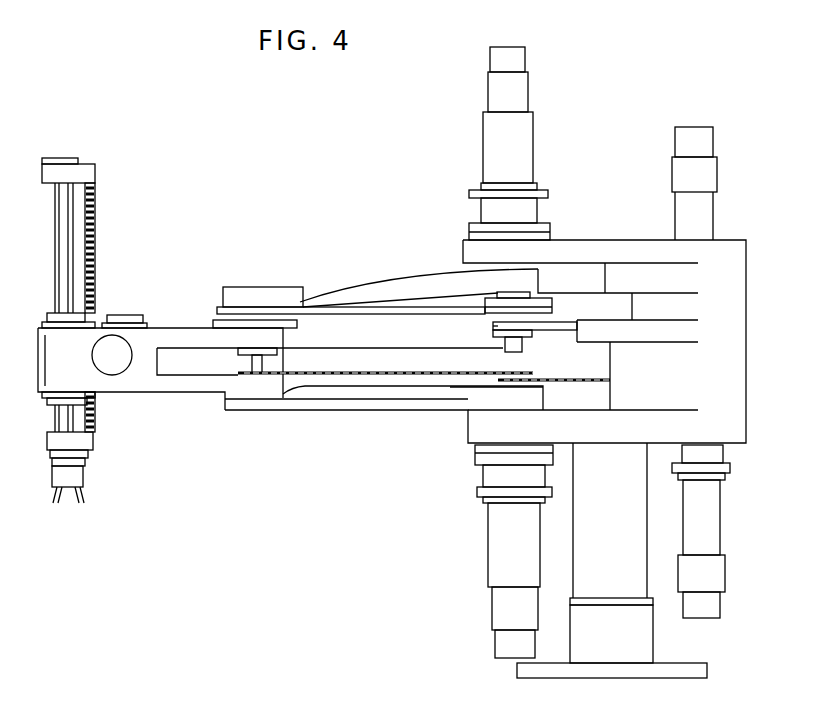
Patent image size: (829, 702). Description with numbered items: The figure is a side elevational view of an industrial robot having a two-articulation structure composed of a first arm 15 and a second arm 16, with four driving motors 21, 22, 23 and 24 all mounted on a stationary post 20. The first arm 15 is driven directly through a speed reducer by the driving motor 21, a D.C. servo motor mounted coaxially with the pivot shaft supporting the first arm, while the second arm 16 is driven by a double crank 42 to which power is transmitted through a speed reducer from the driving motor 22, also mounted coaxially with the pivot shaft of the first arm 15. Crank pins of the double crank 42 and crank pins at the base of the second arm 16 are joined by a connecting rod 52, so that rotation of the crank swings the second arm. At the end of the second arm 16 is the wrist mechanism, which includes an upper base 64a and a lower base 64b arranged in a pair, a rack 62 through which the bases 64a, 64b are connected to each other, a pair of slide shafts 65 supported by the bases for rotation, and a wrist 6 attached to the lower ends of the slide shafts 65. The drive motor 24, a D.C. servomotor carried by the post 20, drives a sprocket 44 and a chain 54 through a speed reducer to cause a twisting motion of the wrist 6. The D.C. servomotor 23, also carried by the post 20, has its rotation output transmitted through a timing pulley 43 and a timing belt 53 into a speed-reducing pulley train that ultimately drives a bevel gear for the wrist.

The wrist 6 is at (80, 480).
The first arm 15 is at (377, 288).
The second arm 16 is at (150, 382).
The stationary post 20 is at (741, 383).
The driving motor 21 is at (490, 541).
The driving motor 22 is at (532, 137).
The D.C. servomotor 23 is at (710, 220).
The drive motor 24 is at (715, 537).
The double crank 42 is at (538, 303).
The timing pulley 43 is at (493, 331).
The sprocket 44 is at (509, 382).
The connecting rod 52 is at (315, 309).
The timing belt 53 is at (567, 324).
The chain 54 is at (337, 376).
The rack 62 is at (95, 237).
The upper base 64a is at (95, 172).
The lower base 64b is at (92, 438).
The slide shafts 65 is at (70, 260).